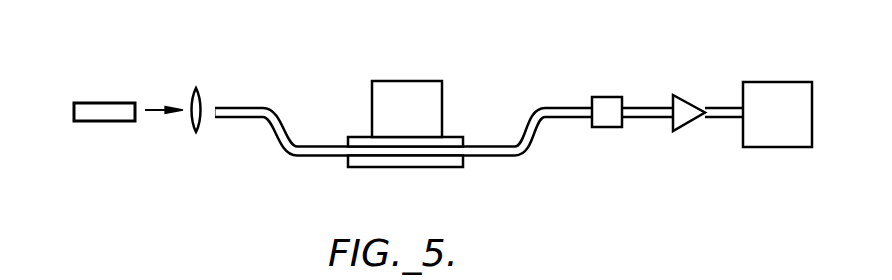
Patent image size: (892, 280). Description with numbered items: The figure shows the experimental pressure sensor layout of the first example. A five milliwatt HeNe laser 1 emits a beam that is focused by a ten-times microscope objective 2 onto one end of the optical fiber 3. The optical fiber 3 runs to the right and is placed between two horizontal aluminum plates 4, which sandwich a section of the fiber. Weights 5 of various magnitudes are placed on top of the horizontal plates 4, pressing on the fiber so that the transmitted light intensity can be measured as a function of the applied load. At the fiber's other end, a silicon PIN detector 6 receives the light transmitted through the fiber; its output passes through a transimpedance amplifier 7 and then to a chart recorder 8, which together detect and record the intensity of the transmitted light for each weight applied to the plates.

The HeNe laser 1 is at (115, 102).
The microscope objective 2 is at (201, 90).
The optical fiber 3 is at (279, 111).
The horizontal aluminum plates 4 is at (462, 166).
The weights 5 is at (442, 82).
The silicon PIN detector 6 is at (605, 97).
The transimpedance amplifier 7 is at (683, 93).
The chart recorder 8 is at (773, 82).